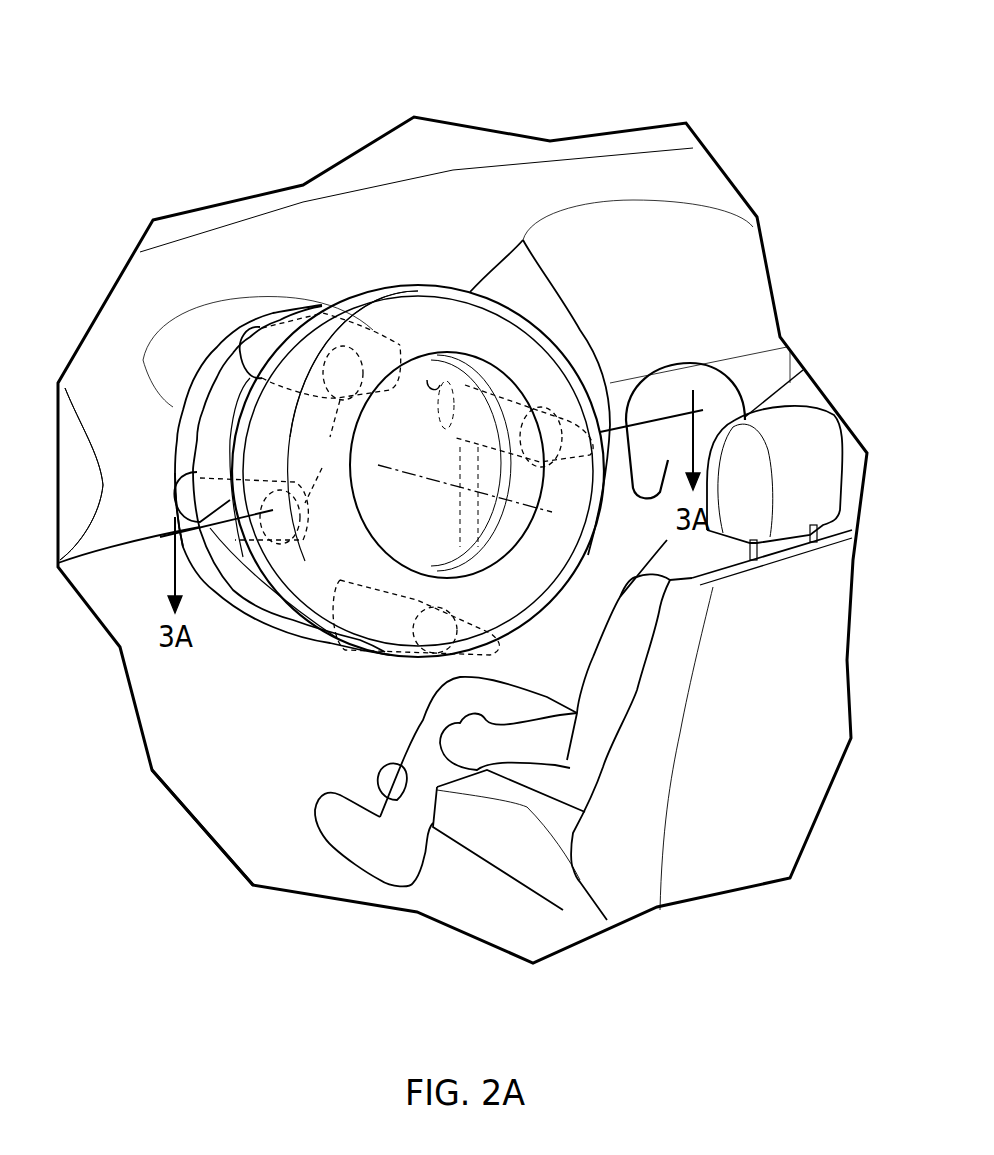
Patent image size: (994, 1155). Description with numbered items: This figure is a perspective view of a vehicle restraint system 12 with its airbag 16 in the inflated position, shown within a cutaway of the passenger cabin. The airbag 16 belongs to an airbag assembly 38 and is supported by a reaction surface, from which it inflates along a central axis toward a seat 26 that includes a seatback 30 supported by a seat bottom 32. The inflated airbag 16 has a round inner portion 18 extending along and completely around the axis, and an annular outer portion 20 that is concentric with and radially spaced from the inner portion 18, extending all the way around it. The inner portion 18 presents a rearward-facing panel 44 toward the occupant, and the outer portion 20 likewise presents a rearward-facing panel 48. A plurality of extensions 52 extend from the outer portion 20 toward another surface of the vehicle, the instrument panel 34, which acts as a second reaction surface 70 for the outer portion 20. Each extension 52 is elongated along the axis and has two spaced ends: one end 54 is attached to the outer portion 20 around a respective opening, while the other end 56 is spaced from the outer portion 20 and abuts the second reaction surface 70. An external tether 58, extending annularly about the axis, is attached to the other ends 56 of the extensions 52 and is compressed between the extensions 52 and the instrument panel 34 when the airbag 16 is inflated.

The restraint system 12 is at (381, 220).
The airbag 16 is at (431, 283).
The inner portion 18 is at (437, 383).
The outer portion 20 is at (470, 297).
The seat 26 is at (729, 582).
The seatback 30 is at (780, 633).
The seat bottom 32 is at (527, 843).
The instrument panel 34 is at (115, 547).
The second reaction surface 70 is at (115, 547).
The airbag assembly 38 is at (283, 682).
The rearward-facing panel 44 is at (418, 531).
The rearward-facing panel 48 is at (350, 541).
The extension 52 is at (327, 333).
The end 54 is at (628, 343).
The end 56 is at (260, 333).
The external tether 58 is at (194, 392).